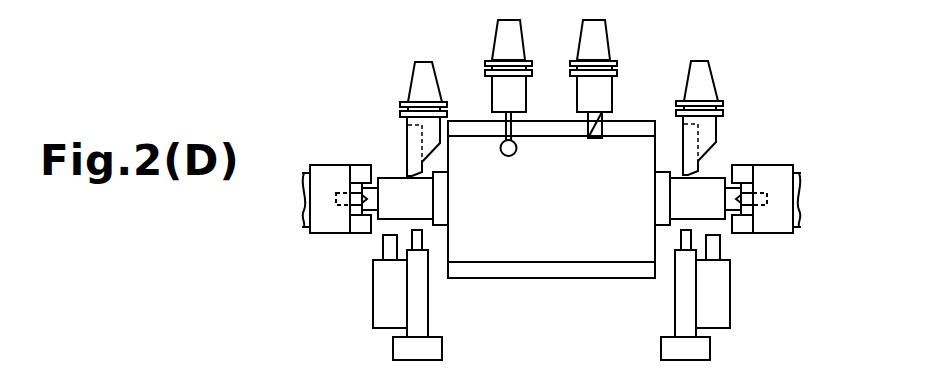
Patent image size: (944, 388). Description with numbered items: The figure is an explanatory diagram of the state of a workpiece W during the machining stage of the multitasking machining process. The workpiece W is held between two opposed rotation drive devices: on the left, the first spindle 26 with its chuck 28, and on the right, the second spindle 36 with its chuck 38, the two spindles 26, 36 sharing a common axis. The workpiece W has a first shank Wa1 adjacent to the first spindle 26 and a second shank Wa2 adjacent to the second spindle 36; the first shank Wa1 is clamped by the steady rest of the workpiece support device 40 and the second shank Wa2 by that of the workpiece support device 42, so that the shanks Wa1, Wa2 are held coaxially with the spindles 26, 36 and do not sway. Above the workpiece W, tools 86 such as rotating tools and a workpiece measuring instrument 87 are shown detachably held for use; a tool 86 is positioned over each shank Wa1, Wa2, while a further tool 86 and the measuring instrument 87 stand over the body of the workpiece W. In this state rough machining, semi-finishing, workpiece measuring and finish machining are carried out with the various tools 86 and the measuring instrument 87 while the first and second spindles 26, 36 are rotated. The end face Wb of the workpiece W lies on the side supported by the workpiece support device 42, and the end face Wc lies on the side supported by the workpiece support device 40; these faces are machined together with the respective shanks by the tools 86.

The first spindle 26 is at (307, 165).
The chuck 28 is at (337, 165).
The second spindle 36 is at (797, 178).
The chuck 38 is at (773, 165).
The workpiece support device 40 is at (380, 295).
The workpiece support device 42 is at (723, 295).
The tool 86 is at (406, 132).
The workpiece measuring instrument 87 is at (498, 92).
The workpiece W is at (550, 124).
The first shank Wa1 is at (385, 178).
The second shank Wa2 is at (720, 178).
The end face Wb is at (654, 265).
The end face Wc is at (447, 265).